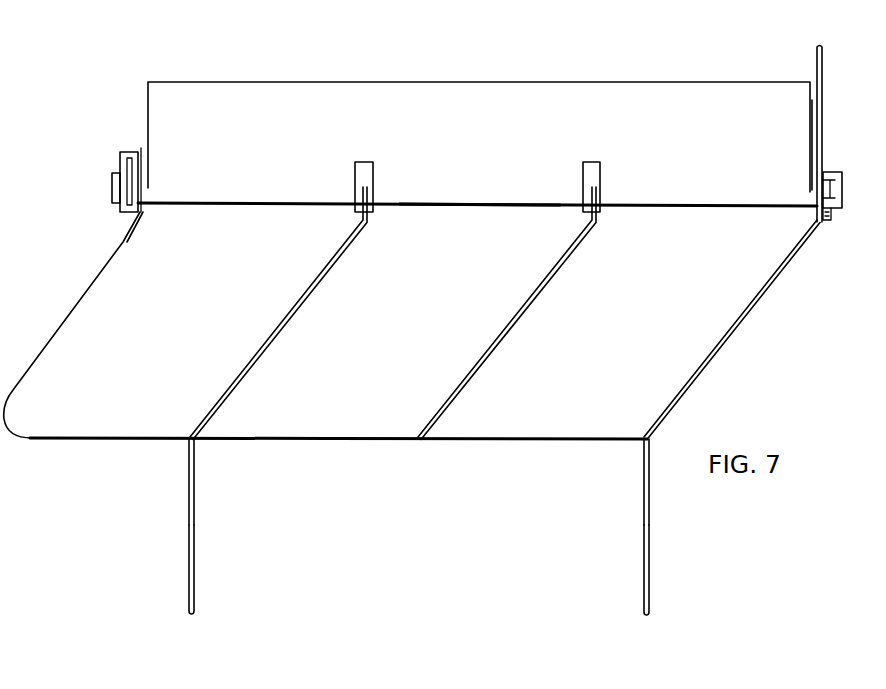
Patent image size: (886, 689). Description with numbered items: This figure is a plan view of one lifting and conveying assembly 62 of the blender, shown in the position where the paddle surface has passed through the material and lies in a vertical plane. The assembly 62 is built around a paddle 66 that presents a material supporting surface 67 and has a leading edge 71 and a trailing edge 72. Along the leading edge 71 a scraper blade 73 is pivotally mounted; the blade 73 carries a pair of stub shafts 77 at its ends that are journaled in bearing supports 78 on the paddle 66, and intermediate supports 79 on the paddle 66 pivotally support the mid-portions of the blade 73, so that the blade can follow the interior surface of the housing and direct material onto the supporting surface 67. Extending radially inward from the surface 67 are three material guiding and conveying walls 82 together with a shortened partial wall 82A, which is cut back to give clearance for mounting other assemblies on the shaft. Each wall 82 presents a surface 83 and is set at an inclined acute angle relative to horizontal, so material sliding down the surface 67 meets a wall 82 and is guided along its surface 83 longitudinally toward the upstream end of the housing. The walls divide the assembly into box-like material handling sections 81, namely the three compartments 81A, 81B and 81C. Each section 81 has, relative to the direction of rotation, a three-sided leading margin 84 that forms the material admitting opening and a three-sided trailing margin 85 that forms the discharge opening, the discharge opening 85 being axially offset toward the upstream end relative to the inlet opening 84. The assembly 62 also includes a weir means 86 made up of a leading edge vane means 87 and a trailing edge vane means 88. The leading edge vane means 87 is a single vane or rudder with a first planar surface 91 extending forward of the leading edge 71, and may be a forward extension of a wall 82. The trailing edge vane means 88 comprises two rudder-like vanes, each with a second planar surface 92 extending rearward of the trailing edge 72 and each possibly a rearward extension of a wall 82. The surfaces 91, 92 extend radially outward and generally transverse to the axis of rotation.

The lifting and conveying assembly 62 is at (442, 318).
The paddle 66 is at (412, 343).
The material supporting surface 67 is at (101, 325).
The leading edge 71 is at (236, 200).
The trailing edge 72 is at (106, 440).
The scraper blade 73 is at (348, 88).
The stub shafts 77 is at (112, 187).
The bearing supports 78 is at (121, 162).
The intermediate supports 79 is at (370, 172).
The material handling sections 81 is at (360, 422).
The material handling compartment 81A is at (605, 394).
The material handling compartment 81B is at (383, 376).
The material handling compartment 81C is at (158, 372).
The material guiding and conveying wall 82 is at (294, 313).
The partial wall 82A is at (134, 236).
The surface 83 is at (265, 331).
The leading margin 84 is at (484, 203).
The trailing margin 85 is at (518, 440).
The weir means 86 is at (476, 318).
The leading edge vane means 87 is at (817, 67).
The trailing edge vane means 88 is at (188, 583).
The first planar surface 91 is at (811, 134).
The second planar surface 92 is at (188, 508).